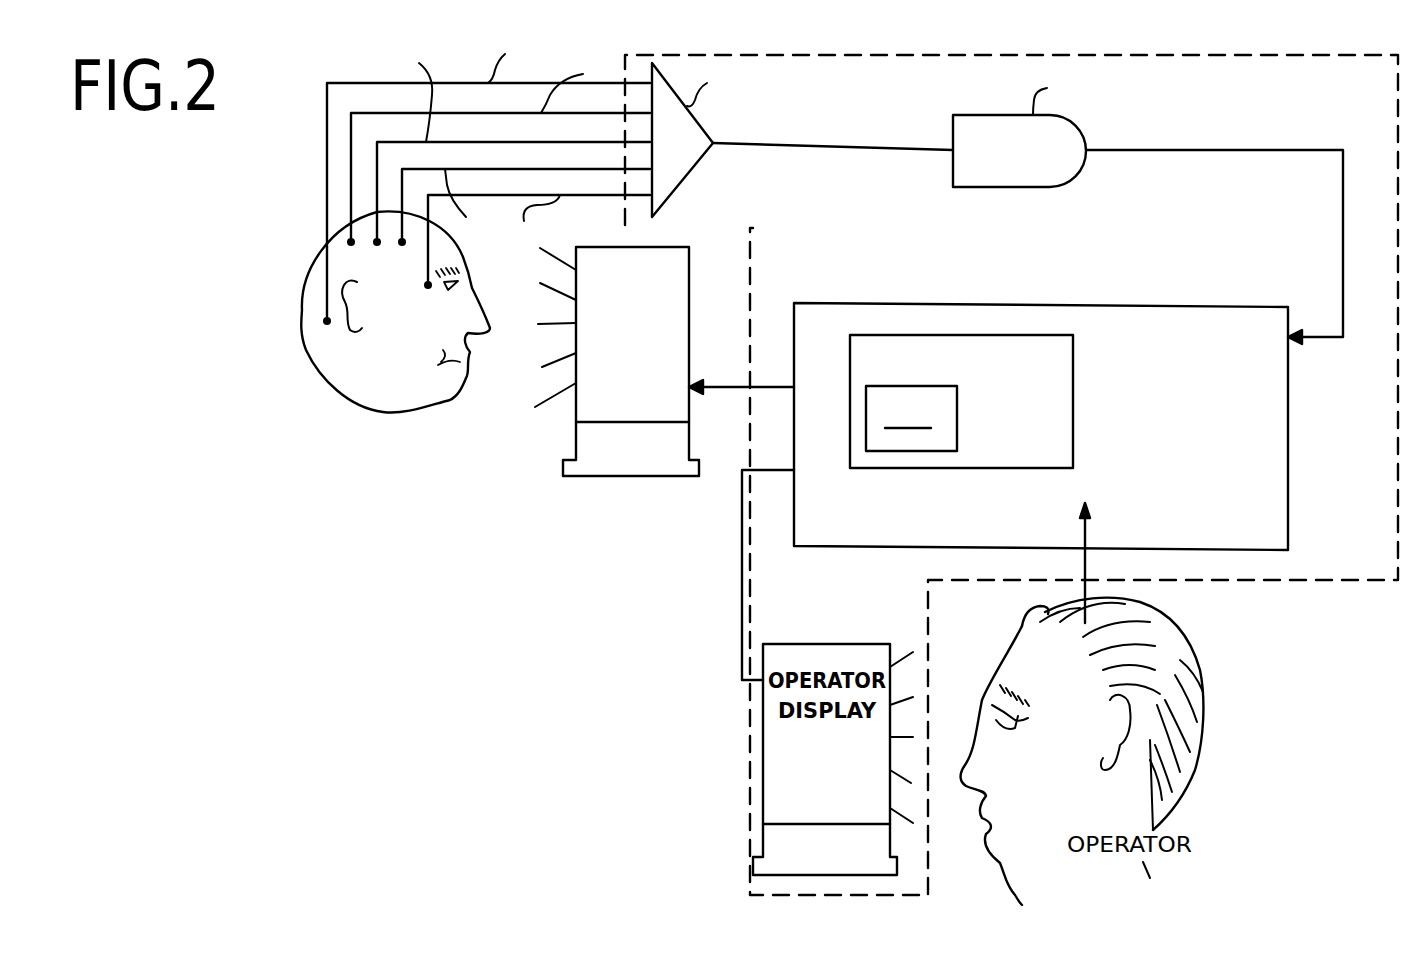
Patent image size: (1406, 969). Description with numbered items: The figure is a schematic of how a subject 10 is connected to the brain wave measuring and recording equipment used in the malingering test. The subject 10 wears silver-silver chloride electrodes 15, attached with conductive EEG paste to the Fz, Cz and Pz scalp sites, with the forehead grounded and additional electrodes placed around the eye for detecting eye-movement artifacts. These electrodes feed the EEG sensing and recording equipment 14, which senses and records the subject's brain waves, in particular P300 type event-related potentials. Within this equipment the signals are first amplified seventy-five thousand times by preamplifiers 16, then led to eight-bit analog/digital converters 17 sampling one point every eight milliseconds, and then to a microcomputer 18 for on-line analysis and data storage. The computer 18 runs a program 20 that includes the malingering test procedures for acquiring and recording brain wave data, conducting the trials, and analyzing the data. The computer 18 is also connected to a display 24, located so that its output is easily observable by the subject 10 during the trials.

The subject 10 is at (302, 303).
The EEG sensing and recording equipment 14 is at (1365, 580).
The silver-silver chloride electrodes 15 is at (327, 163).
The preamplifiers 16 is at (697, 117).
The analog/digital converters 17 is at (1007, 187).
The microcomputer 18 is at (858, 303).
The program 20 is at (961, 401).
The display 24 is at (576, 440).